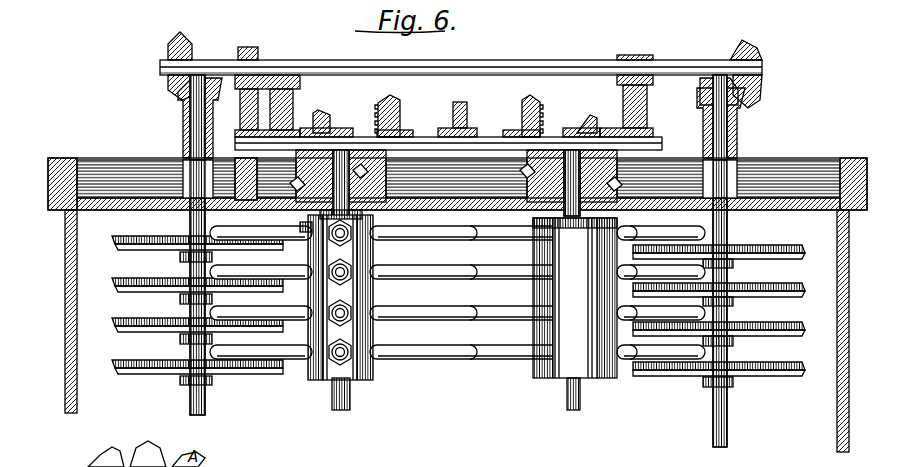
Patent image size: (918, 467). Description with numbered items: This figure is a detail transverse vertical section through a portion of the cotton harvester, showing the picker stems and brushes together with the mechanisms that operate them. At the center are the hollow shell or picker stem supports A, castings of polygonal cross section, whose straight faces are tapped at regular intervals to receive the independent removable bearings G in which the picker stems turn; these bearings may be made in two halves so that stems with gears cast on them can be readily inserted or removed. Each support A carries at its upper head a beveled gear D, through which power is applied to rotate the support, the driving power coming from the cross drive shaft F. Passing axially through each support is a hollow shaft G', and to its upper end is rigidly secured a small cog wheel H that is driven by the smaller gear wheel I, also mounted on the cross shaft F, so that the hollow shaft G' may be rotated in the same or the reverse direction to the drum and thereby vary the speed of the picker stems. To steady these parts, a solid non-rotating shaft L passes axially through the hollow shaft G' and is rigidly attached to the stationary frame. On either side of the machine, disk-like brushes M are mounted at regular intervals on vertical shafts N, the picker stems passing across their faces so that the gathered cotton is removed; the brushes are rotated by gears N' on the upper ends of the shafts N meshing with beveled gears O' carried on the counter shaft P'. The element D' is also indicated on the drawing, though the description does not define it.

The counter shaft P' is at (461, 58).
The beveled gear O' is at (757, 69).
The gear N' is at (430, 74).
The vertical shaft N is at (444, 261).
The cross drive shaft F is at (418, 143).
The smaller gear wheel I is at (320, 112).
The small cog wheel H is at (360, 162).
The beveled gear D is at (457, 301).
The disk-like brush M is at (163, 238).
The bearing G is at (457, 292).
The picker stem support A is at (332, 373).
The frame strip D' is at (314, 217).
The hollow shaft G' is at (469, 224).
The solid non-rotating shaft L is at (357, 395).